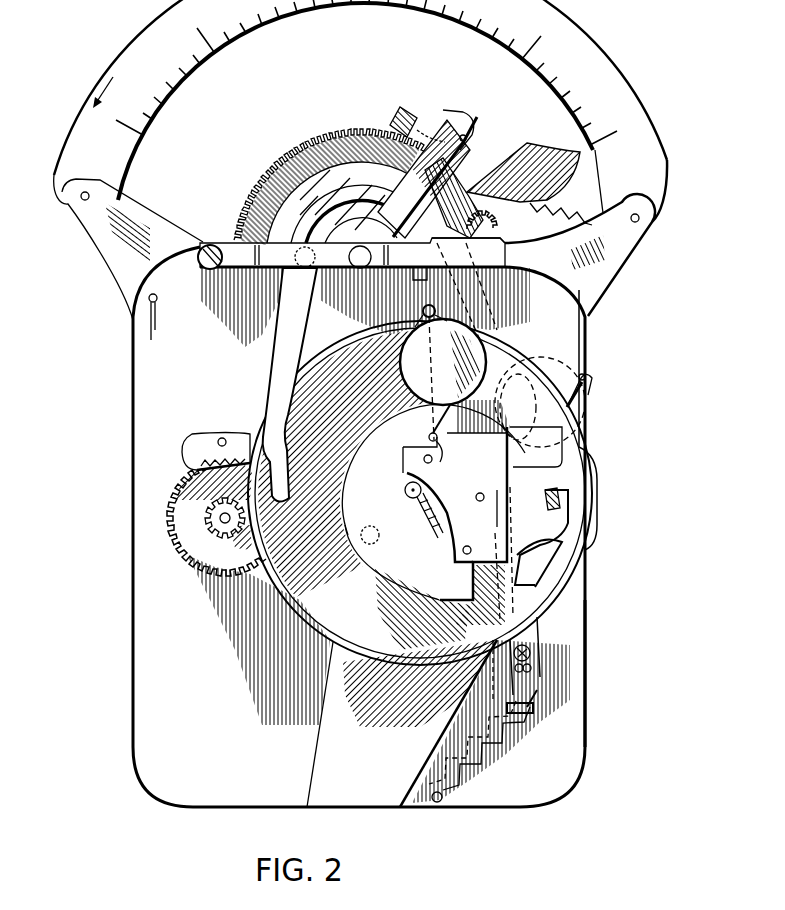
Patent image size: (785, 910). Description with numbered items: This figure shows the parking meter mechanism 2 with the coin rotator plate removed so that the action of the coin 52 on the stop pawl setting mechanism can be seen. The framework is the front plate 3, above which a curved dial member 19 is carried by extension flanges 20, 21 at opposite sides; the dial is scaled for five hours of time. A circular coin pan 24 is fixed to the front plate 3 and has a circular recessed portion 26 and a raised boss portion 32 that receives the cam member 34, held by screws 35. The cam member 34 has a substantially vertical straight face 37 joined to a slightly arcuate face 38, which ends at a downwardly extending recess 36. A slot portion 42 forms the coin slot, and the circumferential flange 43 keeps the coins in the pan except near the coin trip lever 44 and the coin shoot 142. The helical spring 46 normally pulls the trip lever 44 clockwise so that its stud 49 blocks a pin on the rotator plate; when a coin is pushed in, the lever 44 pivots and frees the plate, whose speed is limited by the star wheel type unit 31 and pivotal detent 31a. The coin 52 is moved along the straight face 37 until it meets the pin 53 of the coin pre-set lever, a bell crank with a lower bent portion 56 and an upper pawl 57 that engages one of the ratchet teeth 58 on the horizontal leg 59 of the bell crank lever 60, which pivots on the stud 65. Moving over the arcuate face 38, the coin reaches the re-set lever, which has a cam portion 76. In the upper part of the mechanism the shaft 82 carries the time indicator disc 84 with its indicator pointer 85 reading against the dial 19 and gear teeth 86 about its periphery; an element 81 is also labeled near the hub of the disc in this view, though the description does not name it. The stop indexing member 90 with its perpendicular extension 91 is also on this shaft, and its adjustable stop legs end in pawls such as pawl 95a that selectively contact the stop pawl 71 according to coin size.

The parking meter mechanism 2 is at (589, 712).
The front plate 3 is at (157, 772).
The dial member 19 is at (626, 96).
The extension flange 20 is at (114, 257).
The extension flange 21 is at (611, 265).
The coin pan 24 is at (362, 592).
The circular recessed portion 26 is at (484, 633).
The star wheel type unit 31 is at (186, 542).
The pivotal detent 31a is at (184, 455).
The raised boss portion 32 is at (381, 553).
The cam member 34 is at (447, 518).
The screw 35 is at (405, 489).
The recess 36 is at (438, 440).
The straight face 37 is at (514, 469).
The arcuate face 38 is at (511, 353).
The slot portion 42 is at (592, 482).
The flange 43 is at (264, 419).
The coin trip lever 44 is at (570, 561).
The helical spring 46 is at (485, 748).
The stud 49 is at (570, 516).
The coin 52 is at (478, 335).
The pin 53 is at (594, 377).
The lower bent portion 56 is at (590, 394).
The pawl 57 is at (486, 222).
The ratchet teeth 58 is at (498, 240).
The leg 59 is at (223, 287).
The bell crank lever 60 is at (281, 361).
The stud 65 is at (203, 270).
The stop pawl 71 is at (396, 255).
The cam portion 76 is at (370, 535).
The hub 81 is at (275, 231).
The shaft 82 is at (348, 257).
The time indicator disc 84 is at (338, 130).
The indicator pointer 85 is at (553, 148).
The gear teeth 86 is at (267, 175).
The member 90 is at (405, 220).
The perpendicular extension 91 is at (460, 128).
The pawl 95a is at (455, 165).
The coin shoot 142 is at (322, 757).